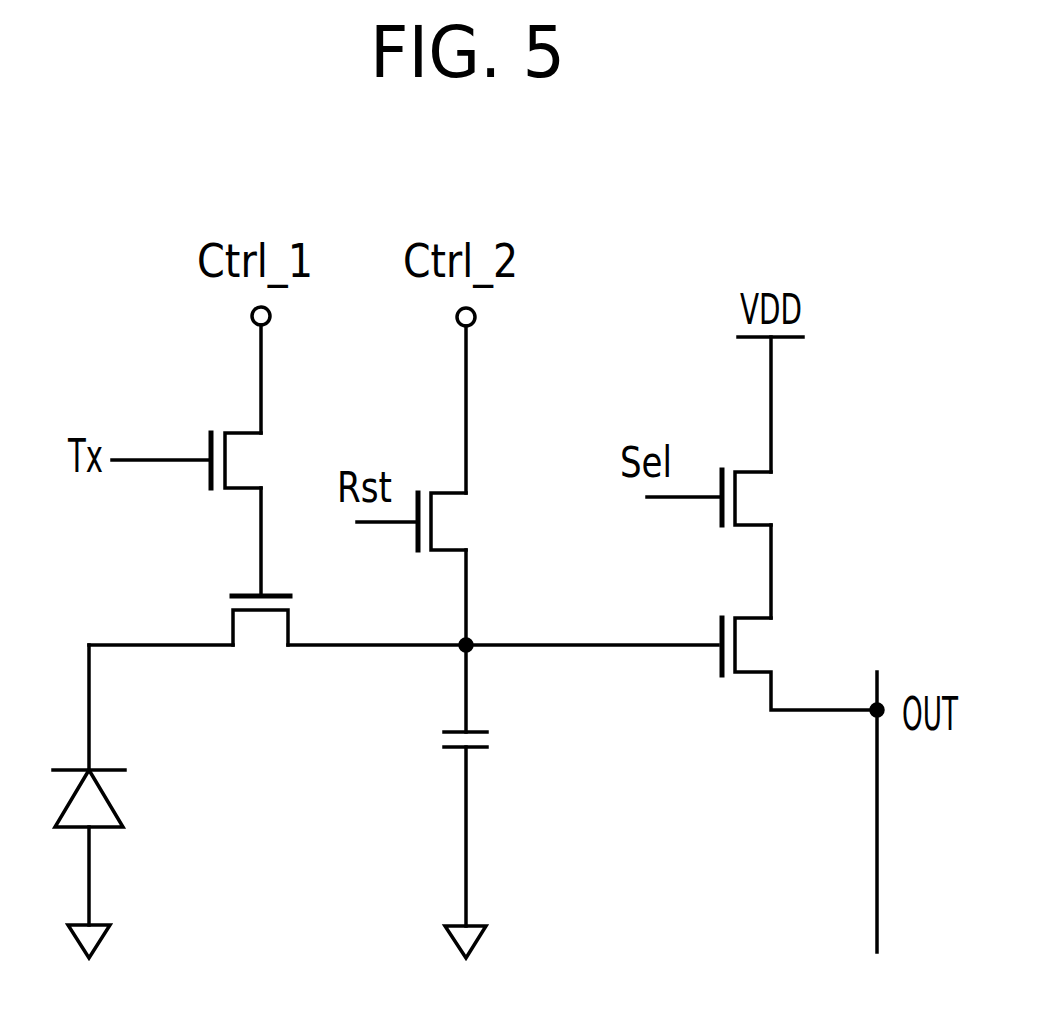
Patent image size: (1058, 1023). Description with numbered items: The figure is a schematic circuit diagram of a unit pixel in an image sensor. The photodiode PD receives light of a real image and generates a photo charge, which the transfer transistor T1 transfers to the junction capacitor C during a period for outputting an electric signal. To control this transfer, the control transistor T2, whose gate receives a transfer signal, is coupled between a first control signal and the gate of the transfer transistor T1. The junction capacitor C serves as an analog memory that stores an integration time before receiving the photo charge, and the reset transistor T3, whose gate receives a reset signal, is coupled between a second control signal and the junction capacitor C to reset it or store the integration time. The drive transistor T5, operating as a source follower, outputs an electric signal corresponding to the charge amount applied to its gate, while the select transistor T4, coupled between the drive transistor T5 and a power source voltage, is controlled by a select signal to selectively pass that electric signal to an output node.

The transfer transistor T1 is at (261, 646).
The control transistor T2 is at (260, 512).
The reset transistor T3 is at (464, 569).
The select transistor T4 is at (772, 544).
The drive transistor T5 is at (799, 664).
The photodiode PD is at (116, 864).
The junction capacitor C is at (449, 801).